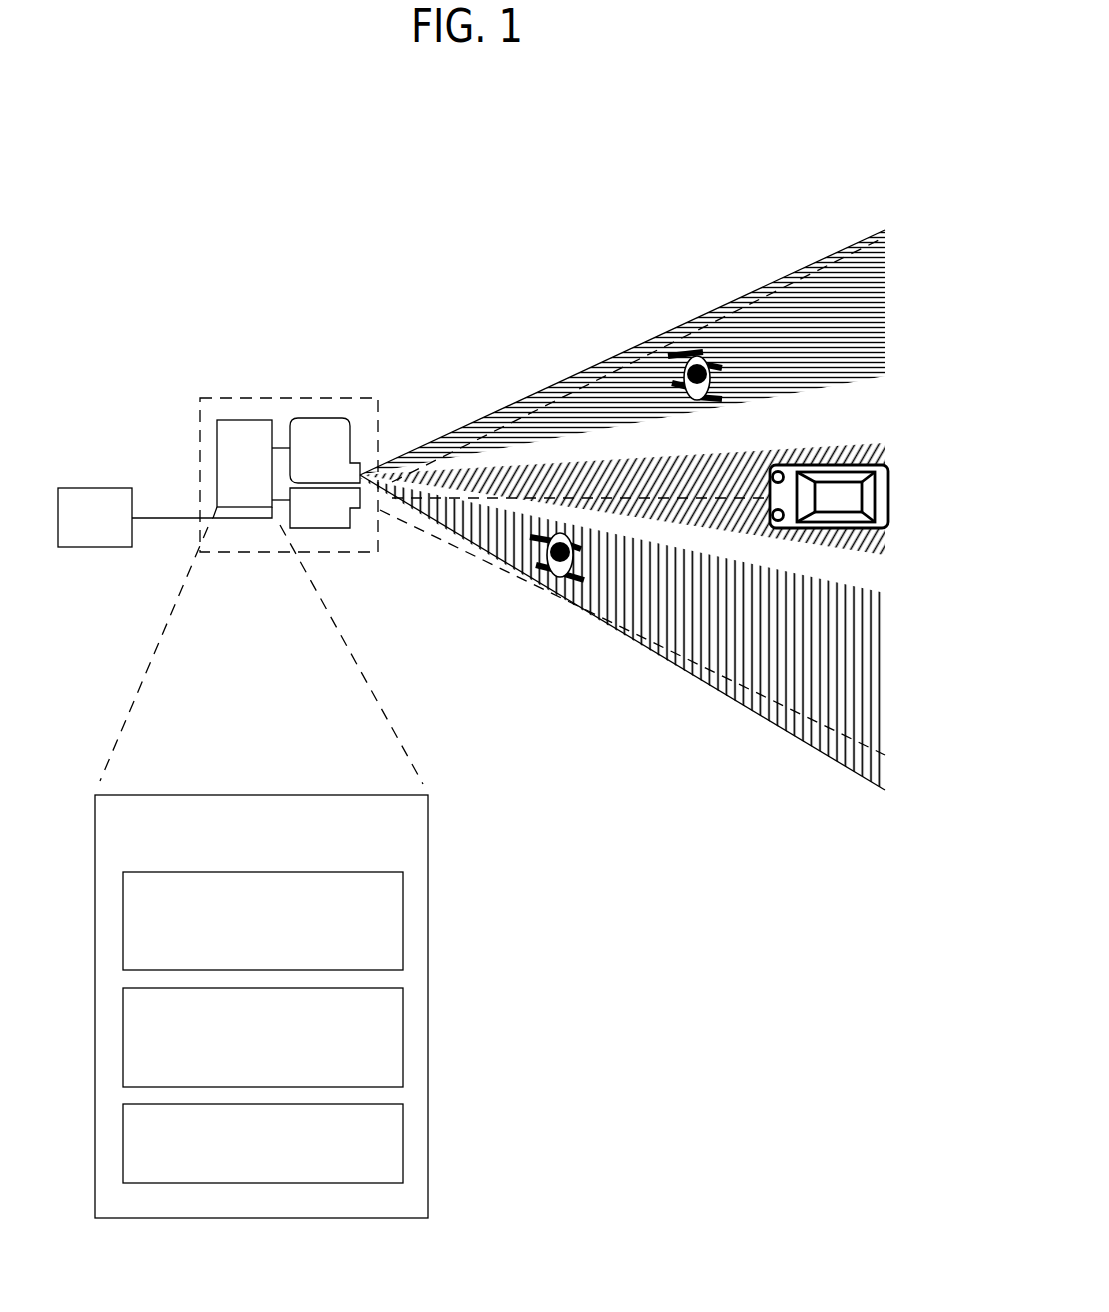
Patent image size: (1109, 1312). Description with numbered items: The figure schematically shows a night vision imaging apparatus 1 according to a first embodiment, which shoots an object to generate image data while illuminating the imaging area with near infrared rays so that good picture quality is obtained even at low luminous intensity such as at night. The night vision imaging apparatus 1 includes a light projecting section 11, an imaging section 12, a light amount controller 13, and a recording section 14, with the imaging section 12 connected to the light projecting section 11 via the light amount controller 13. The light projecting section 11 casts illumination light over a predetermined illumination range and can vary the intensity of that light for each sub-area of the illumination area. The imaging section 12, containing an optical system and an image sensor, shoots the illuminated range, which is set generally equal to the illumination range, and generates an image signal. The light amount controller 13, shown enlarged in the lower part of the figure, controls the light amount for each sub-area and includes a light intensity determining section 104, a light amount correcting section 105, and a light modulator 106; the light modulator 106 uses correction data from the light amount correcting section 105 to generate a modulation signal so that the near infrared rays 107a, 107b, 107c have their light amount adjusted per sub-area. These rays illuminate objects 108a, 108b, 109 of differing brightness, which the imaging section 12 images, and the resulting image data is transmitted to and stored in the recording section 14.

The night vision imaging apparatus 1 is at (242, 177).
The light projecting section 11 is at (318, 418).
The imaging section 12 is at (330, 530).
The light amount controller 13 is at (240, 418).
The recording section 14 is at (95, 488).
The light intensity determining section 104 is at (403, 916).
The light amount correcting section 105 is at (403, 1028).
The light modulator 106 is at (403, 1140).
The near infrared rays 107a is at (640, 380).
The near infrared rays 107b is at (593, 470).
The near infrared rays 107c is at (478, 527).
The object 108a is at (557, 597).
The object 108b is at (700, 355).
The object 109 is at (840, 500).